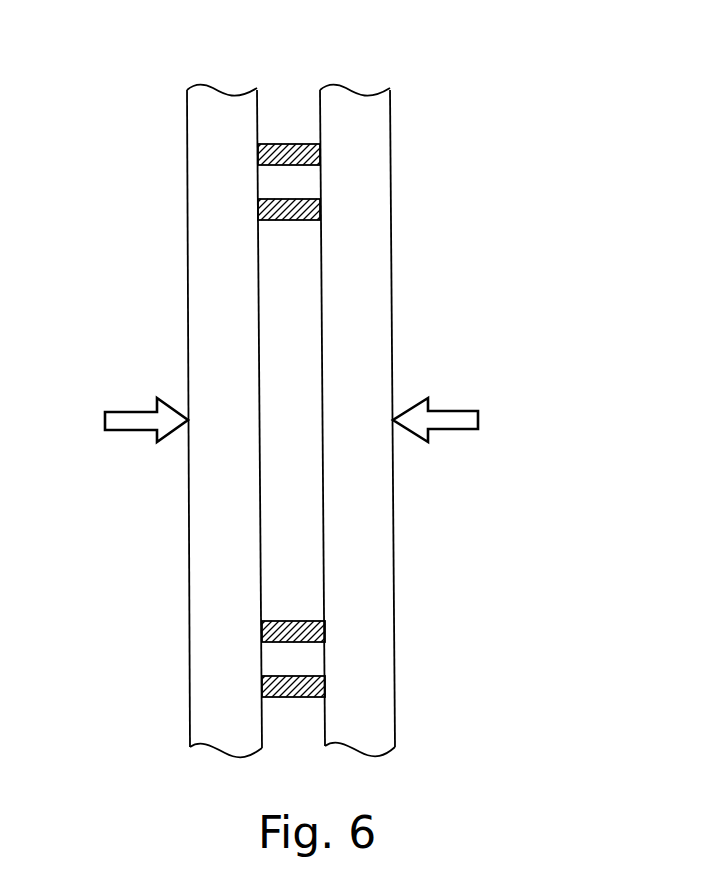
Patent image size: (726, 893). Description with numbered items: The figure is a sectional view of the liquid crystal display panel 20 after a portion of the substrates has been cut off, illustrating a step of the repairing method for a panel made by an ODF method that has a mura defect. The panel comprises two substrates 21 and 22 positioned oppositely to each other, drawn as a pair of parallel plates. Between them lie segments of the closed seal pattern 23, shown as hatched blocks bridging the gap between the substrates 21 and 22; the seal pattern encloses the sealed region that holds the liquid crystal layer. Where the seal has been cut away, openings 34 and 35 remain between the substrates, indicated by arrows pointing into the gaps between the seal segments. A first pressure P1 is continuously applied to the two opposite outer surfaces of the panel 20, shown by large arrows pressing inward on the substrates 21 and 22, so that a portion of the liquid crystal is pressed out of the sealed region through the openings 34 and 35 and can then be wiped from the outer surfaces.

The liquid crystal display panel 20 is at (573, 120).
The substrate 21 is at (363, 105).
The substrate 22 is at (224, 105).
The closed seal pattern 23 is at (318, 152).
The opening 34 is at (262, 180).
The opening 35 is at (270, 660).
The first pressure P1 is at (292, 420).